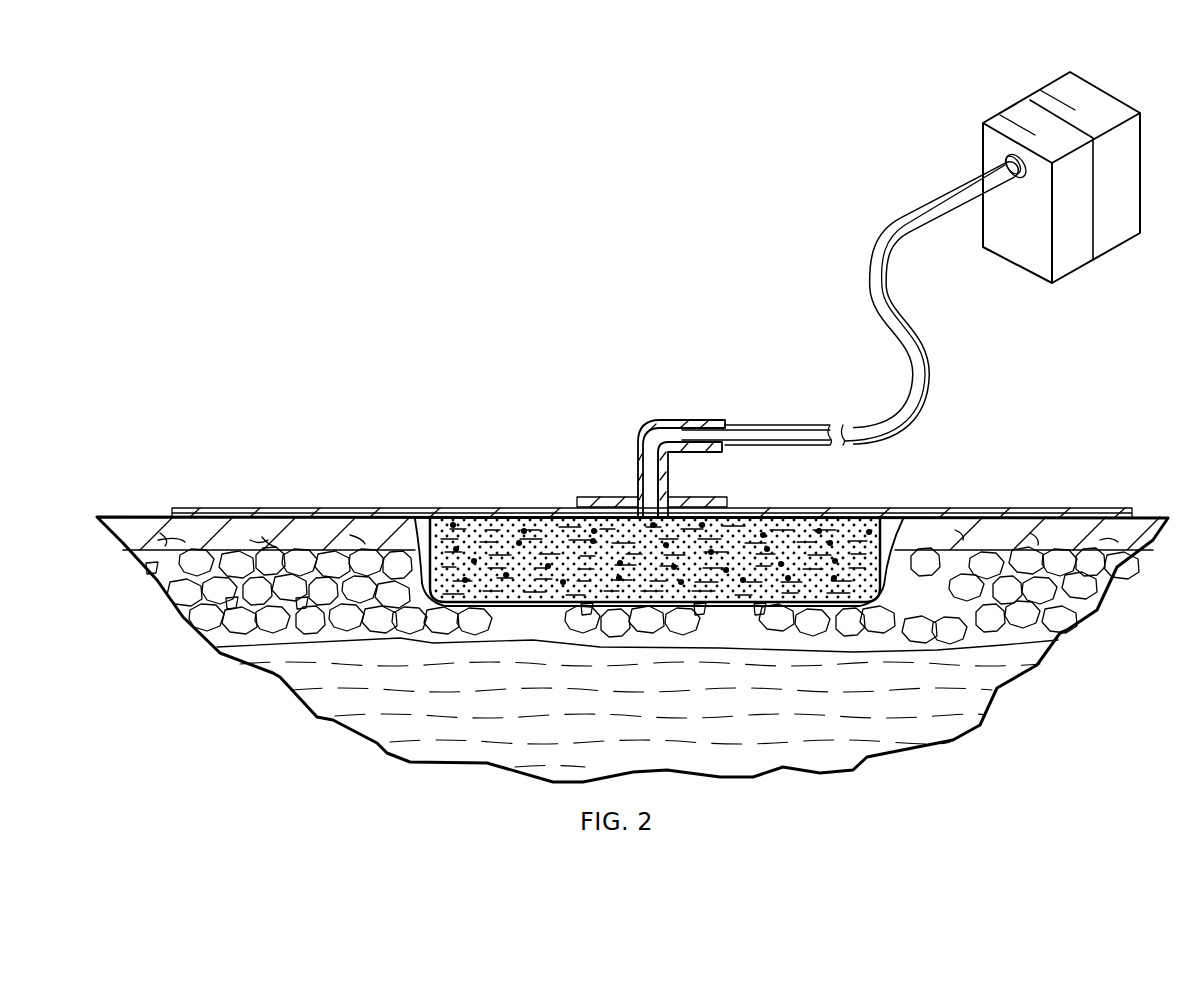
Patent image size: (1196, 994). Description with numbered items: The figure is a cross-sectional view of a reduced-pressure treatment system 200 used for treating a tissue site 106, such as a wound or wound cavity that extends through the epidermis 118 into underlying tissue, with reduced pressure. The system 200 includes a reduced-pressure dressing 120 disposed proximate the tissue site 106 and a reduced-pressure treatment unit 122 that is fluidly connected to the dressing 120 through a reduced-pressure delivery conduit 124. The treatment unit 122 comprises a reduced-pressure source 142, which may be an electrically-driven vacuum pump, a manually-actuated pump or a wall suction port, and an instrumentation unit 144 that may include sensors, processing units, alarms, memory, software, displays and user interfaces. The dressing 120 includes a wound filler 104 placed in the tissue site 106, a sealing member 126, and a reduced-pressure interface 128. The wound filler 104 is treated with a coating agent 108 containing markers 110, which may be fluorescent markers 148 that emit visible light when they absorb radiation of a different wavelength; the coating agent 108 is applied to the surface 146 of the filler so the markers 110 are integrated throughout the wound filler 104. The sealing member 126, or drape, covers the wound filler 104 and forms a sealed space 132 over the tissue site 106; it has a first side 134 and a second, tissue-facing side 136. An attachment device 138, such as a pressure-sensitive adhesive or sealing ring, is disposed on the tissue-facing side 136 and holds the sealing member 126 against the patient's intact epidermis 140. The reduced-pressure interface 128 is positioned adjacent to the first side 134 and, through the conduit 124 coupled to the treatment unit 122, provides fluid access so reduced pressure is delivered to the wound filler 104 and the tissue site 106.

The reduced-pressure treatment system 200 is at (401, 289).
The reduced-pressure treatment unit 122 is at (1110, 82).
The reduced-pressure source 142 is at (1007, 115).
The instrumentation unit 144 is at (1050, 88).
The reduced-pressure delivery conduit 124 is at (937, 195).
The reduced-pressure dressing 120 is at (558, 439).
The reduced-pressure interface 128 is at (612, 497).
The sealing member 126 is at (221, 506).
The first side 134 is at (271, 508).
The intact epidermis 140 is at (135, 517).
The attachment device 138 is at (193, 540).
The wound filler 104 is at (415, 518).
The coating agent 108 is at (465, 520).
The fluorescent markers 148 is at (513, 520).
The surface 146 is at (553, 520).
The sealed space 132 is at (883, 527).
The tissue site 106 is at (880, 599).
The markers 110 is at (493, 598).
The second, tissue-facing side 136 is at (1046, 552).
The epidermis 118 is at (1105, 545).